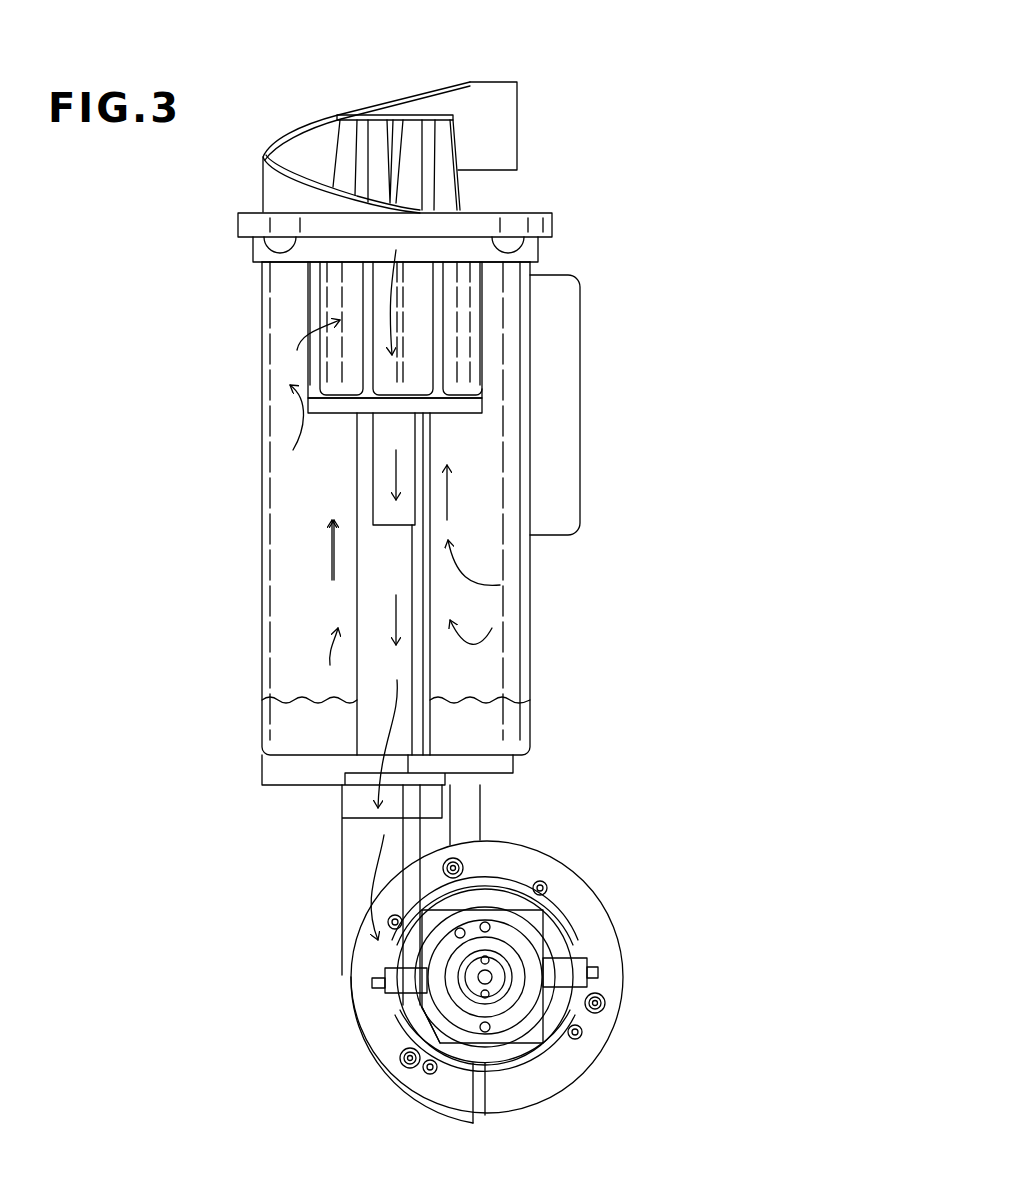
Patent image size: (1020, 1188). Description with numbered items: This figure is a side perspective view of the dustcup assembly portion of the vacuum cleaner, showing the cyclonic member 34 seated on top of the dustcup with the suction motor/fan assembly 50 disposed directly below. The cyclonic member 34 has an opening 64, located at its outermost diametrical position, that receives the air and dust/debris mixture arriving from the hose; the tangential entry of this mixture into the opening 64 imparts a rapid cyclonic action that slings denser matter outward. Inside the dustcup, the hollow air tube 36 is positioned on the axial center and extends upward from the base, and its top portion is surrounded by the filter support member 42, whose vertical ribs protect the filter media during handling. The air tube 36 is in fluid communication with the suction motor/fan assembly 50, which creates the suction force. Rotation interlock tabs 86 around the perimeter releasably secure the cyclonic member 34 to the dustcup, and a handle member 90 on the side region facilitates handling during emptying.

The cyclonic member 34 is at (262, 186).
The opening 64 is at (500, 133).
The rotation interlock tabs 86 is at (280, 256).
The handle member 90 is at (582, 350).
The filter support member 42 is at (455, 422).
The air tube 36 is at (357, 606).
The suction motor/fan assembly 50 is at (582, 884).